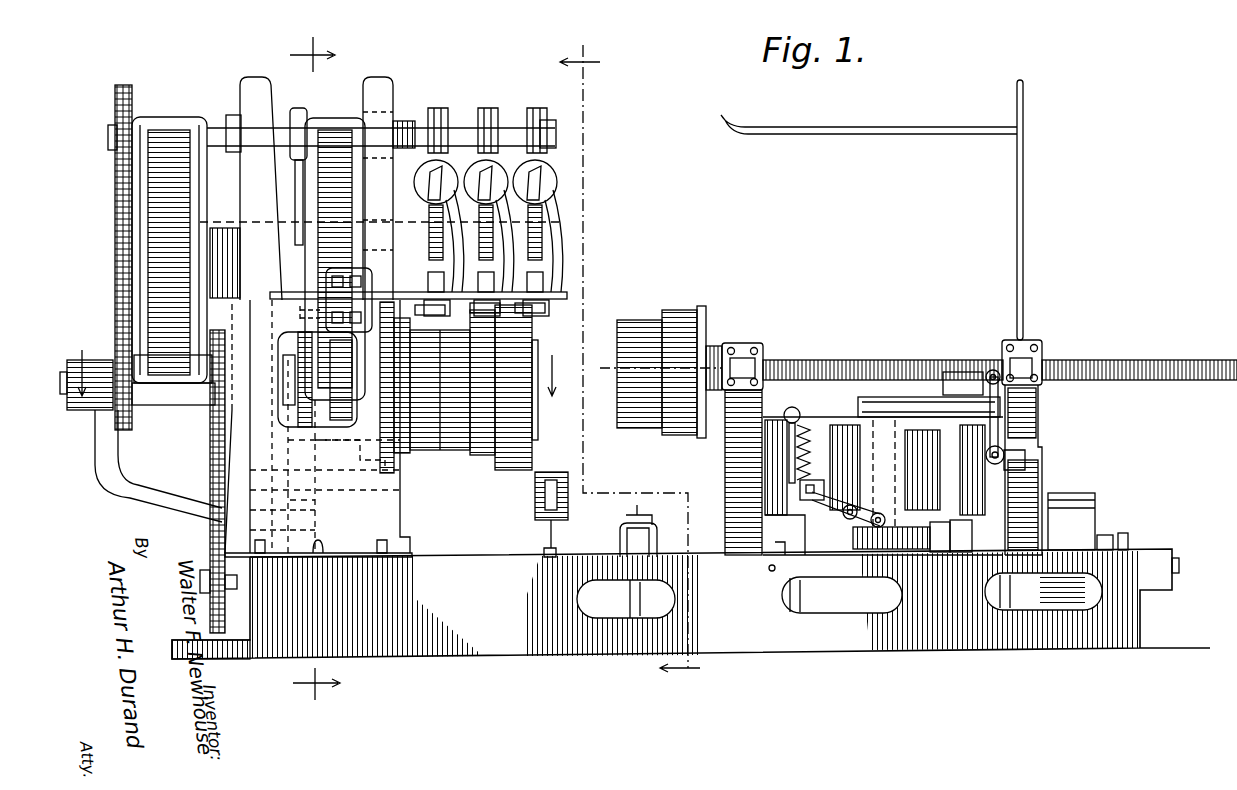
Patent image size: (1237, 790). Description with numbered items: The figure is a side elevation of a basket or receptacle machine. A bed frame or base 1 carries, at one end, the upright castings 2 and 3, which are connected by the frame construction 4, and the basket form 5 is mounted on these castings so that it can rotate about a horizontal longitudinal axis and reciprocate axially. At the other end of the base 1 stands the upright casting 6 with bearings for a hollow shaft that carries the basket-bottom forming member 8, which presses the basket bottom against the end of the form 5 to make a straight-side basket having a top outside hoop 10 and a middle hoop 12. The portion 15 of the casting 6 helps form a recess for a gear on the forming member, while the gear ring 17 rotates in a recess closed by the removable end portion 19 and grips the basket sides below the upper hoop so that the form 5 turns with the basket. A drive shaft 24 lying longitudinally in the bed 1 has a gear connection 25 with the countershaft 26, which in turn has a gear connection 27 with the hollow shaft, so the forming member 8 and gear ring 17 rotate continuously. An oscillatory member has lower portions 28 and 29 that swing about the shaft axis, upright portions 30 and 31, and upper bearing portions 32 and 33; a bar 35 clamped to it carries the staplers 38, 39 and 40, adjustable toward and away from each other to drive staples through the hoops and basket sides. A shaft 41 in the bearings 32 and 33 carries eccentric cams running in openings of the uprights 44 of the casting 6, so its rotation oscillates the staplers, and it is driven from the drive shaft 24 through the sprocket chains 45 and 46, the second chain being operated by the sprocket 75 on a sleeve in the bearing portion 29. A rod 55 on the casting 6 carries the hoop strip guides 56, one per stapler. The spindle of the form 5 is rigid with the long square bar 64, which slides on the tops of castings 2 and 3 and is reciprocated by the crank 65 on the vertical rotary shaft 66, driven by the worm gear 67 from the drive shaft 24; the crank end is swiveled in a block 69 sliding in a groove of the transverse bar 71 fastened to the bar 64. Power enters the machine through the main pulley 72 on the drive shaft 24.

The bed frame or base 1 is at (691, 604).
The upright casting 2 is at (740, 452).
The upright casting 3 is at (1033, 435).
The frame construction 4 is at (883, 486).
The basket form 5 is at (680, 323).
The upright casting 6 is at (385, 528).
The basket-bottom forming member 8 is at (315, 372).
The top outside hoop 10 is at (631, 362).
The middle hoop 12 is at (325, 361).
The portion of the casting 15 is at (400, 458).
The gear ring 17 is at (460, 434).
The removable end portion 19 is at (533, 436).
The drive shaft 24 is at (200, 592).
The gear connection 25 is at (287, 543).
The countershaft 26 is at (354, 465).
The gear connection 27 is at (293, 323).
The lower portion of oscillatory member 28 is at (340, 378).
The lower portion of oscillatory member 29 is at (173, 372).
The upright portion 30 is at (327, 197).
The upright portion 31 is at (192, 195).
The upper bearing portion 32 is at (335, 258).
The upper bearing portion 33 is at (173, 261).
The bar 35 is at (233, 224).
The stapler 38 is at (533, 260).
The stapler 39 is at (490, 240).
The stapler 40 is at (447, 223).
The shaft 41 is at (465, 128).
The uprights 44 is at (252, 80).
The sprocket chain 45 is at (208, 524).
The sprocket chain 46 is at (115, 243).
The rod 55 is at (551, 301).
The hoop strip guides 56 is at (517, 306).
The long square bar 64 is at (851, 372).
The crank 65 is at (925, 398).
The vertically disposed rotary shaft 66 is at (852, 430).
The worm gear 67 is at (910, 546).
The block 69 is at (973, 385).
The transverse bar 71 is at (955, 372).
The main pulley 72 is at (1075, 518).
The sprocket 75 is at (135, 406).